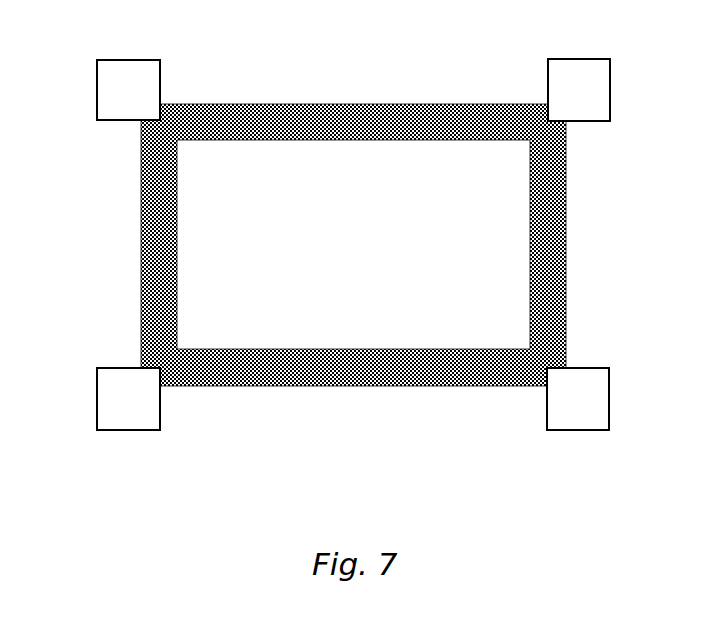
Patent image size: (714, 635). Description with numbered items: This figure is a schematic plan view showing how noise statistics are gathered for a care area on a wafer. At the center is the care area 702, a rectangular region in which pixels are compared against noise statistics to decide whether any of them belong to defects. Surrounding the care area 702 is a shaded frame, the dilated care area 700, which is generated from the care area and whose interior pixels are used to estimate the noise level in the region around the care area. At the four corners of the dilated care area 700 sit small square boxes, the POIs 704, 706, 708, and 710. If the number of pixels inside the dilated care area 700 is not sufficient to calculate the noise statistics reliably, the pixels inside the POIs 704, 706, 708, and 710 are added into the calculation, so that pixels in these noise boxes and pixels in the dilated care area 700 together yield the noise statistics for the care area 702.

The dilated care area 700 is at (566, 217).
The care area 702 is at (353, 245).
The POI 704 is at (160, 72).
The POI 706 is at (610, 85).
The POI 708 is at (547, 415).
The POI 710 is at (97, 415).